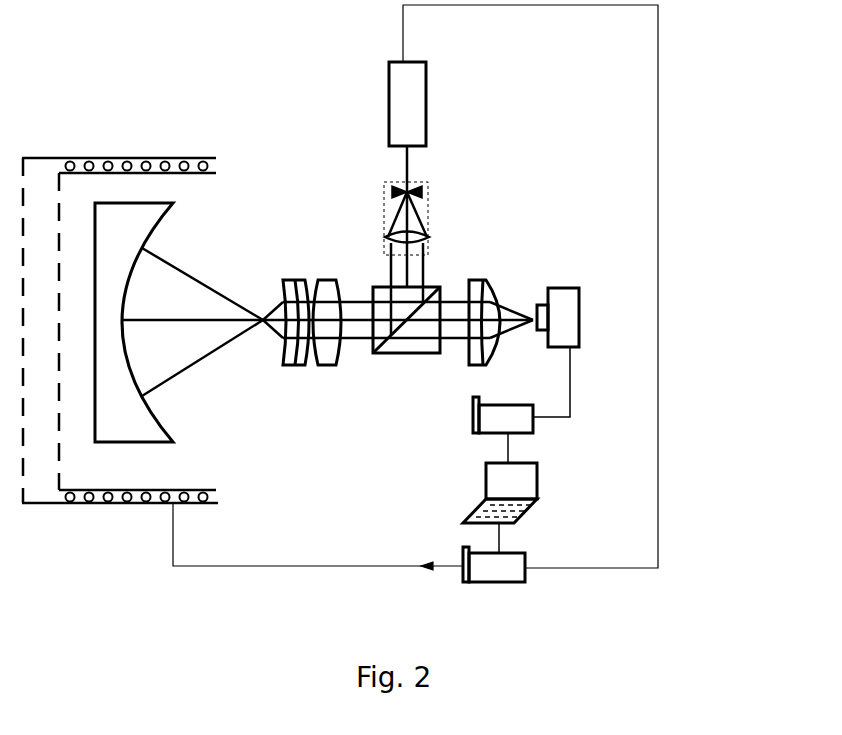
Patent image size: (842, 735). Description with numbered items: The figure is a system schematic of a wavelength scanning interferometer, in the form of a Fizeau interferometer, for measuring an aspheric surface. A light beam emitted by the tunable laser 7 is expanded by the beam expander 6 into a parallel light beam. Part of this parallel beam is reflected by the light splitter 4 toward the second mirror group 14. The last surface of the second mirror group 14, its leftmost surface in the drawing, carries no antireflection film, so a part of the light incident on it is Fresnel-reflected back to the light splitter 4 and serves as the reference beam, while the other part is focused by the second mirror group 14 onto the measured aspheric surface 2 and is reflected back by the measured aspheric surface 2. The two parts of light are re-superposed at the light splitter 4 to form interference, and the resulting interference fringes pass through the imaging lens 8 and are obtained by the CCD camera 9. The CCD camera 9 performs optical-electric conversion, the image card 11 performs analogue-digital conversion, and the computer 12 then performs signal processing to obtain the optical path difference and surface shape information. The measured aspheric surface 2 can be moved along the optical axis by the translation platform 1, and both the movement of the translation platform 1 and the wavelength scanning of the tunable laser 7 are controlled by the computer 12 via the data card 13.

The translation platform 1 is at (120, 261).
The measured aspheric surface 2 is at (189, 231).
The light splitter 4 is at (569, 222).
The beam expander 6 is at (379, 139).
The tunable laser 7 is at (420, 84).
The imaging lens 8 is at (617, 285).
The CCD camera 9 is at (649, 341).
The image card 11 is at (619, 416).
The computer 12 is at (614, 500).
The data card 13 is at (614, 551).
The second mirror group 14 is at (328, 283).